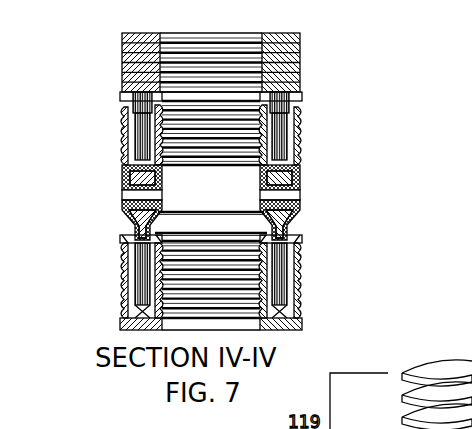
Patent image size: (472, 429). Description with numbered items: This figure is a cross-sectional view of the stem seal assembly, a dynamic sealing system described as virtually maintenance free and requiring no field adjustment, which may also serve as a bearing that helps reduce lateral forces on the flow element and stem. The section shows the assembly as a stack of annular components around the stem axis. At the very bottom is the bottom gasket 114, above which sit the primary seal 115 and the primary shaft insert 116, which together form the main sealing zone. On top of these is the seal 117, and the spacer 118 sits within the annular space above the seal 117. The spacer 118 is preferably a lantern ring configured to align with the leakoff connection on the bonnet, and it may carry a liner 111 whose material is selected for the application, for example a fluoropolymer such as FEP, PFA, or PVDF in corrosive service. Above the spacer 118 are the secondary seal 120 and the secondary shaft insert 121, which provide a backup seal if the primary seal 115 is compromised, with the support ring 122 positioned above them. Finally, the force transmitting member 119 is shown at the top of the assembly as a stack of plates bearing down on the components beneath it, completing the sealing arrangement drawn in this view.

The force transmitting member 119 is at (122, 92).
The support ring 122 is at (283, 100).
The secondary shaft insert 121 is at (283, 130).
The secondary seal 120 is at (301, 150).
The liner 111 is at (300, 168).
The spacer 118 is at (280, 210).
The seal 117 is at (300, 235).
The primary shaft insert 116 is at (302, 250).
The primary seal 115 is at (285, 284).
The bottom gasket 114 is at (290, 322).